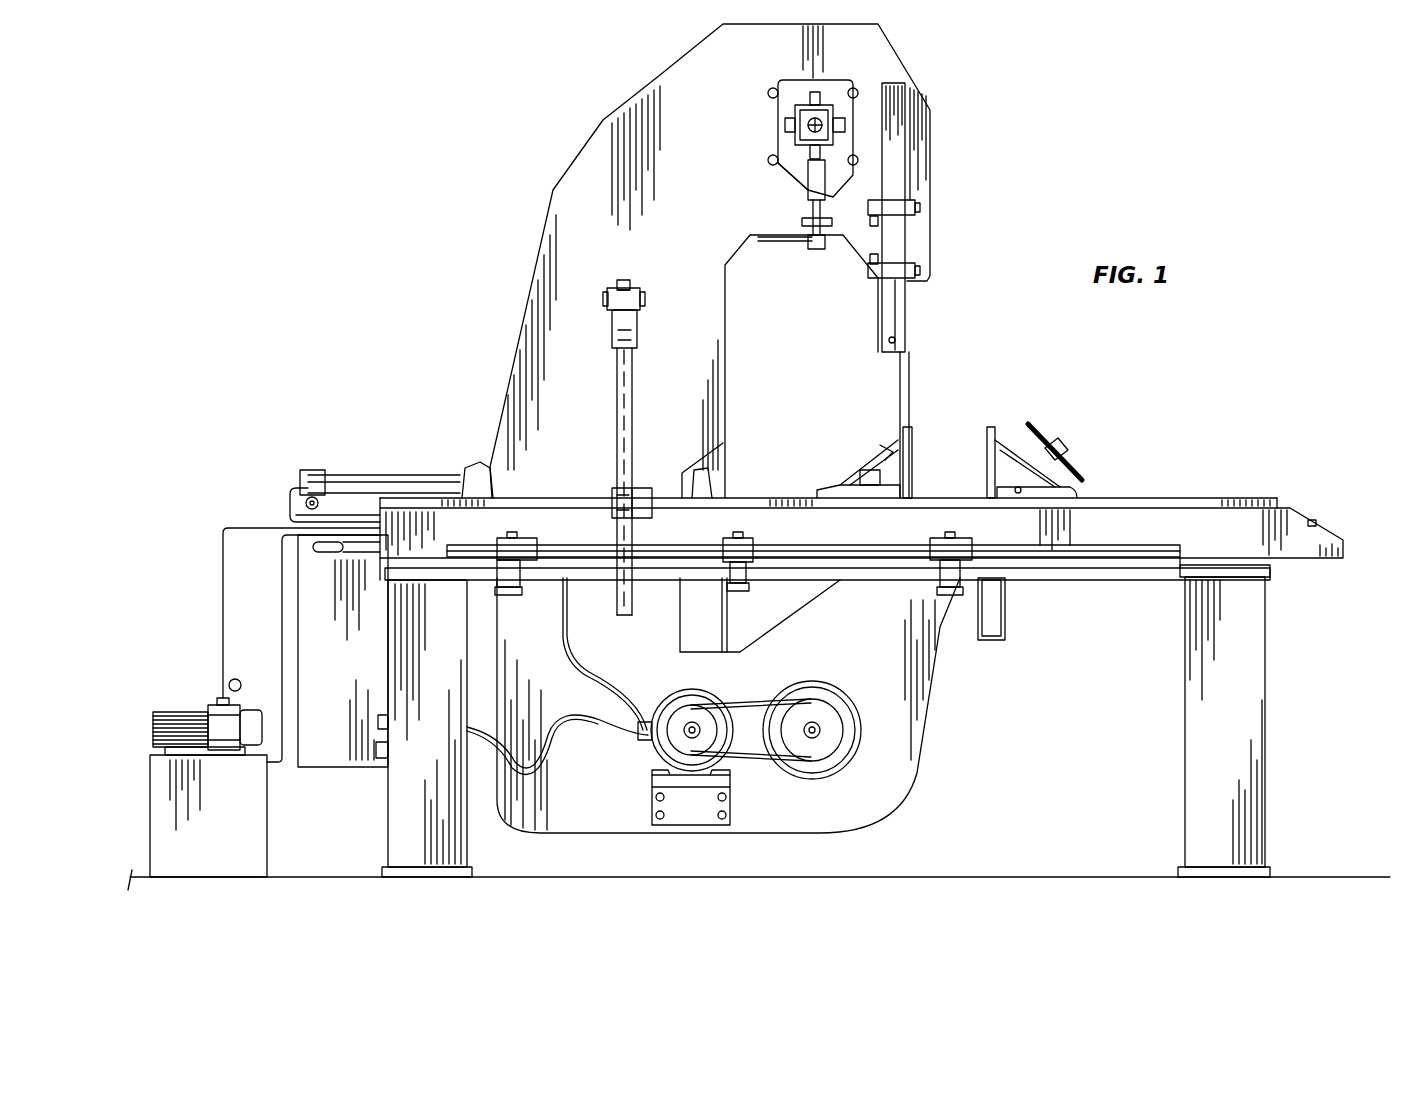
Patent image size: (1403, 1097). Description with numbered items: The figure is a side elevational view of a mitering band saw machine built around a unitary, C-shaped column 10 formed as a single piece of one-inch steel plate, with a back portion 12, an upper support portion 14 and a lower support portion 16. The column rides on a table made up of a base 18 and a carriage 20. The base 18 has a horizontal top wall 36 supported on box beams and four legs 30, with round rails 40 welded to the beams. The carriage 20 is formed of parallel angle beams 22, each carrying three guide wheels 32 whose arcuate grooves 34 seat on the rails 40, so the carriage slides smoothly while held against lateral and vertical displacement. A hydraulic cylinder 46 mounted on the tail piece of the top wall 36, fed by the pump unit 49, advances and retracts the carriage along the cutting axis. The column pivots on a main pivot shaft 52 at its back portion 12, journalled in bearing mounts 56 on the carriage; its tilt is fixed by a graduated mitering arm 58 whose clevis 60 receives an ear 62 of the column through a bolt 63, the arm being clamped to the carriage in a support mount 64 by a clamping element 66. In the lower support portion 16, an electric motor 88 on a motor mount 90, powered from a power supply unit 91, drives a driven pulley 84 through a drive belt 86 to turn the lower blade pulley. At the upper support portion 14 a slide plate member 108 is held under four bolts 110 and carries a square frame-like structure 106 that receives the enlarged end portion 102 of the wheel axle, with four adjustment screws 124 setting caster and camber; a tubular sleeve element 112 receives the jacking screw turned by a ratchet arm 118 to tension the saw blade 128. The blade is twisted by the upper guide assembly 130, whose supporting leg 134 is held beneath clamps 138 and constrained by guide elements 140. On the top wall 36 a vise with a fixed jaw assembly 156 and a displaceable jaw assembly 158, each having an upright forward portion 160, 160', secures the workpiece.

The column 10 is at (520, 335).
The back portion 12 is at (545, 295).
The upper support portion 14 is at (887, 72).
The lower support portion 16 is at (895, 760).
The base 18 is at (1265, 695).
The carriage 20 is at (1012, 622).
The parallel beams 22 is at (768, 588).
The legs 30 is at (400, 812).
The guide wheels 32 is at (740, 535).
The circumferential arcuate groove 34 is at (520, 540).
The horizontal top wall 36 is at (1198, 502).
The rails 40 is at (1150, 570).
The cylinder 46 is at (395, 478).
The pump unit 49 is at (180, 712).
The main pivot shaft 52 is at (685, 482).
The bearing mounts 56 is at (475, 468).
The mitering arm 58 is at (624, 410).
The clevis 60 is at (632, 320).
The ear 62 is at (612, 282).
The bolt 63 is at (640, 298).
The support mount 64 is at (632, 590).
The clamping element 66 is at (612, 492).
The driven pulley 84 is at (812, 772).
The drive belt 86 is at (755, 700).
The electric motor 88 is at (688, 705).
The motor mount 90 is at (652, 808).
The power supply unit 91 is at (328, 745).
The enlarged-diameter end portion 102 is at (778, 140).
The frame-like structure 106 is at (828, 105).
The slide plate member 108 is at (790, 178).
The bolts 110 is at (771, 98).
The tubular sleeve element 112 is at (812, 200).
The ratchet arm 118 is at (782, 243).
The adjustment screws 124 is at (810, 95).
The saw blade 128 is at (898, 390).
The upper guide assembly 130 is at (908, 162).
The supporting leg 134 is at (896, 315).
The clamps 138 is at (905, 222).
The guide elements 140 is at (865, 258).
The fixed jaw assembly 156 is at (890, 455).
The displaceable jaw assembly 158 is at (988, 432).
The upright forward portion 160 is at (1003, 462).
The upright forward portion 160' is at (937, 448).